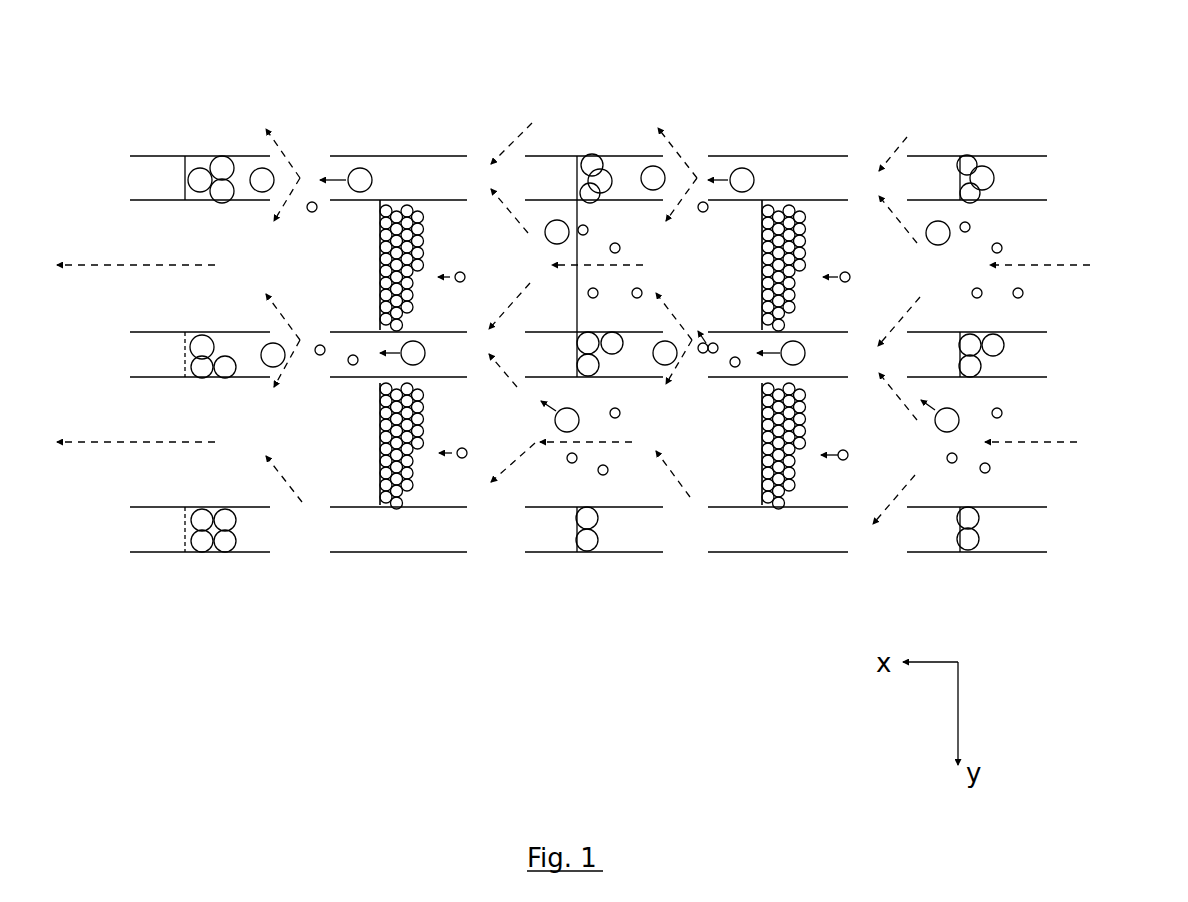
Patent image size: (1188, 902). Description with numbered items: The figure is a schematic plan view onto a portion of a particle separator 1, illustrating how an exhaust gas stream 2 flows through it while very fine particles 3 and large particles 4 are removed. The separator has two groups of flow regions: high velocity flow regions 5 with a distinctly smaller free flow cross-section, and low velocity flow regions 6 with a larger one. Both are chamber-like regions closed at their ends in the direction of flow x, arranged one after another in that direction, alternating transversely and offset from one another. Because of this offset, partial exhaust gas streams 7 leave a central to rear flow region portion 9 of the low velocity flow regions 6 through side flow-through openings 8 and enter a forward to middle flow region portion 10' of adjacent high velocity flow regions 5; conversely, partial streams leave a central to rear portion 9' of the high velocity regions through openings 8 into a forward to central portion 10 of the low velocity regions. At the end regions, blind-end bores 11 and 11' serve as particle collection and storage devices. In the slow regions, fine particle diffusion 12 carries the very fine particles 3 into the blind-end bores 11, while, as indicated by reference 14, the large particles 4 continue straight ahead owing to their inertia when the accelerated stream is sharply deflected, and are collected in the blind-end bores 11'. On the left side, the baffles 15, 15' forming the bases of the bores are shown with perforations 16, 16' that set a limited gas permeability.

The particle separator 1 is at (815, 115).
The exhaust gas stream 2 is at (1092, 263).
The very fine particles 3 is at (992, 468).
The large particles 4 is at (983, 537).
The high velocity flow regions 5 is at (413, 163).
The low velocity flow regions 6 is at (632, 240).
The partial exhaust gas streams 7 is at (283, 150).
The flow-through openings 8 is at (486, 155).
The central to rear flow region portion of the low velocity flow regions 9 is at (640, 418).
The central to rear flow region portion of the high velocity flow regions 9' is at (265, 594).
The forward to central flow region portion of the low velocity flow regions 10 is at (391, 458).
The forward to middle flow region portion of the high velocity flow regions 10' is at (532, 577).
The blind-end bores of the low velocity flow regions 11 is at (435, 377).
The blind-end bores of the high velocity flow regions 11' is at (234, 316).
The fine particle diffusion 12 is at (442, 276).
The straight-ahead movement of large particles 14 is at (242, 357).
The baffle 15 is at (561, 291).
The baffle 15' is at (541, 382).
The perforations 16 is at (365, 444).
The perforations 16' is at (137, 186).